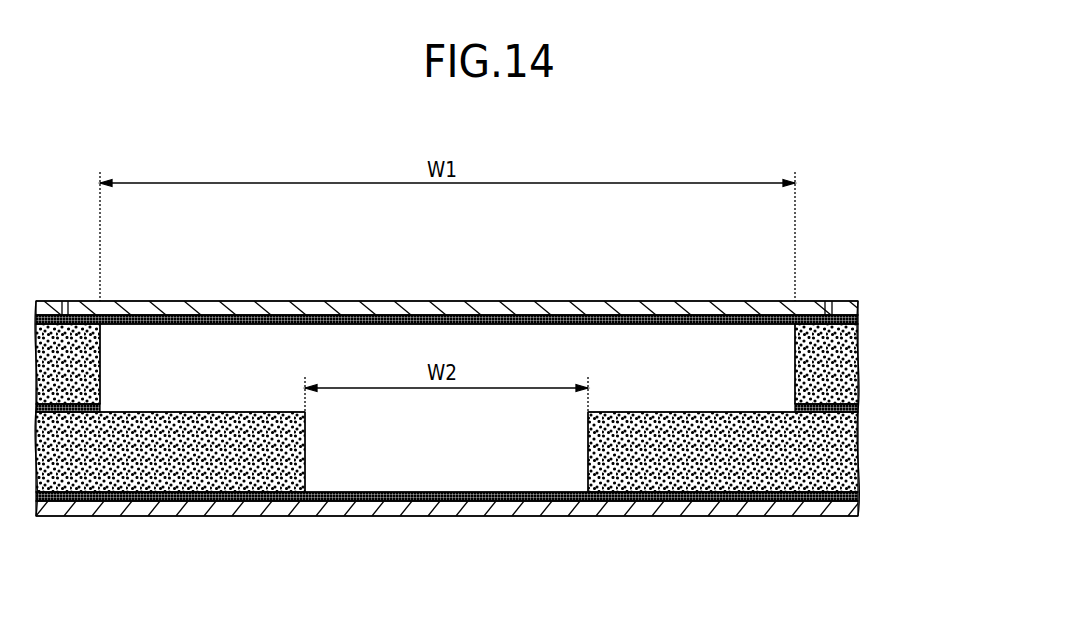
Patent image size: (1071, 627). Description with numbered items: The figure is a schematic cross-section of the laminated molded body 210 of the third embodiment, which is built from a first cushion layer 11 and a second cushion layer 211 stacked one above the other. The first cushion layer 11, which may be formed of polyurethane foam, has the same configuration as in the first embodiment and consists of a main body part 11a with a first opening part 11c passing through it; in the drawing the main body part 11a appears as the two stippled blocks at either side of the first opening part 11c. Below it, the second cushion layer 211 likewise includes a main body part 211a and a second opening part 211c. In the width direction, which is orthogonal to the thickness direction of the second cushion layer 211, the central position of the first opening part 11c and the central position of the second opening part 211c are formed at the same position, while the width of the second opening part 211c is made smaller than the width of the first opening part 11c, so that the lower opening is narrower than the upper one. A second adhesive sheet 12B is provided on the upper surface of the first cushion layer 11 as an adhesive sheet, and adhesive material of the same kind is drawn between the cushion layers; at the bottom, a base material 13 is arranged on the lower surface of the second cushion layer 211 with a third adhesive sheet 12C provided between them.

The laminated molded body 210 is at (793, 164).
The first cushion layer 11 is at (480, 302).
The main body part 11a is at (80, 350).
The first opening part 11c is at (101, 356).
The second adhesive sheet 12B is at (840, 313).
The third adhesive sheet 12C is at (823, 498).
The base material 13 is at (788, 519).
The second cushion layer 211 is at (489, 504).
The main body part 211a is at (168, 455).
The second opening part 211c is at (309, 469).